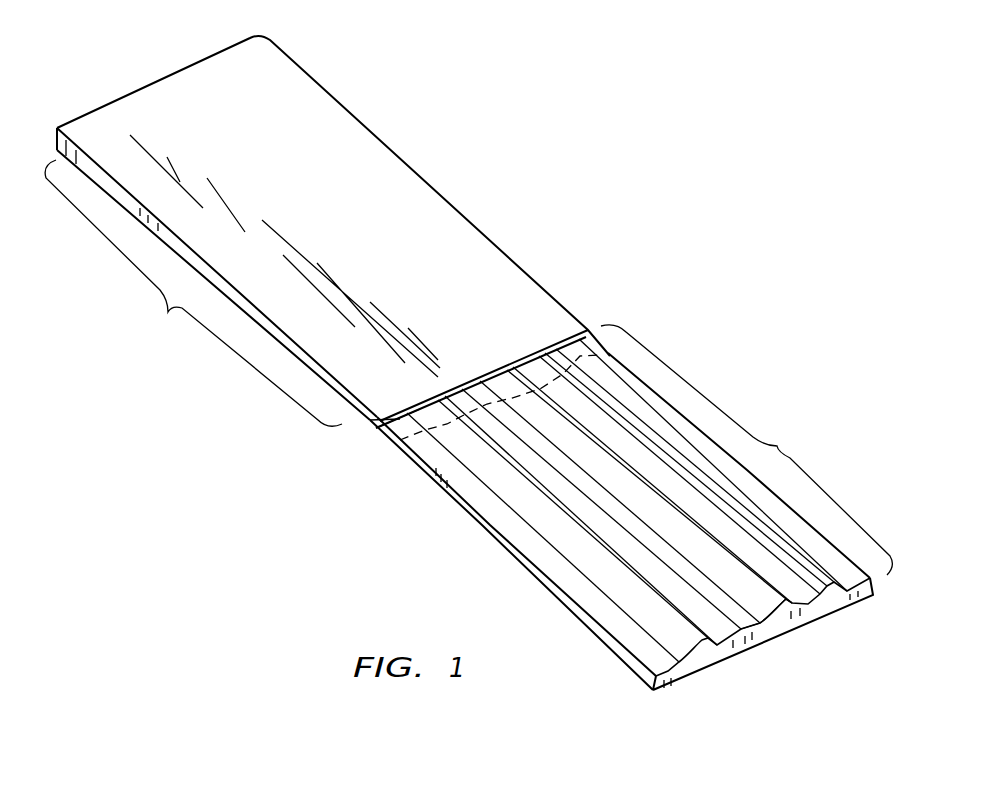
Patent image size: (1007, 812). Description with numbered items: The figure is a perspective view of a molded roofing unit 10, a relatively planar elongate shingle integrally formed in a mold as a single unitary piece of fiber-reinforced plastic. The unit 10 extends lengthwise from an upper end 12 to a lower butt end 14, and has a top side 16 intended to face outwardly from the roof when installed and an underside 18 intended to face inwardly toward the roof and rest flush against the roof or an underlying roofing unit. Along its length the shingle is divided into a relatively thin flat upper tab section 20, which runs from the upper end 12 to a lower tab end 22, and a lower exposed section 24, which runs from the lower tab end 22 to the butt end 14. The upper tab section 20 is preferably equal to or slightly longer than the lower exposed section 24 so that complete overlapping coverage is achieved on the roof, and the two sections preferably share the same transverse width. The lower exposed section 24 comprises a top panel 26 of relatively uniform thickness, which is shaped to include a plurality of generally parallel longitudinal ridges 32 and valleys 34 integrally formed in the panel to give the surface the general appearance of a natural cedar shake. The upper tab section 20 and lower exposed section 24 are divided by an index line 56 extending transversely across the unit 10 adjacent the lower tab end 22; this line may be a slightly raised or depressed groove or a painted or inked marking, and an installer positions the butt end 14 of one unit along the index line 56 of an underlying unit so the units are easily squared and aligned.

The molded roofing unit 10 is at (600, 255).
The upper end 12 is at (175, 73).
The lower butt end 14 is at (665, 680).
The top side 16 is at (557, 317).
The underside 18 is at (472, 548).
The upper tab section 20 is at (193, 293).
The lower tab end 22 is at (358, 432).
The lower exposed section 24 is at (746, 450).
The top panel 26 is at (668, 538).
The longitudinal ridges 32 is at (785, 603).
The valleys 34 is at (770, 605).
The index line 56 is at (447, 390).